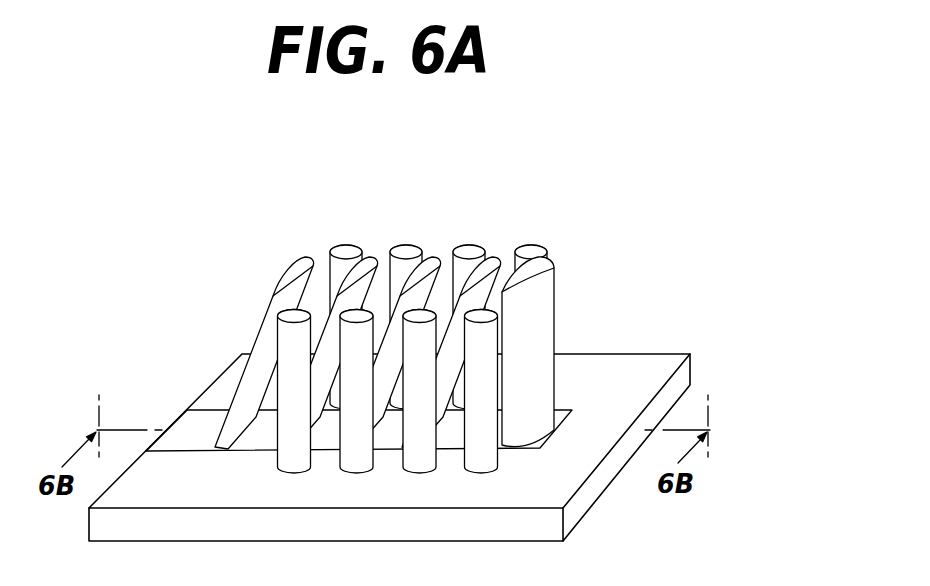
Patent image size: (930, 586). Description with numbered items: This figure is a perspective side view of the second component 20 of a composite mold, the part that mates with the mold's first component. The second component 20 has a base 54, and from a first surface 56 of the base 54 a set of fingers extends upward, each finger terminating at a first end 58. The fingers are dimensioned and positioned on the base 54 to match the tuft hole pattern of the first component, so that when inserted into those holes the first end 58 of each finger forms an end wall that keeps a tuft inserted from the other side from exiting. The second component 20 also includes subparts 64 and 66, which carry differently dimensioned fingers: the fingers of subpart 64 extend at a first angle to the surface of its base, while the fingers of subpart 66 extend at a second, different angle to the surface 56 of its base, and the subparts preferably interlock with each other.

The second component 20 is at (670, 336).
The base 54 is at (667, 400).
The first surface 56 is at (600, 365).
The first end 58 is at (349, 244).
The subpart 64 is at (242, 353).
The subpart 66 is at (177, 420).